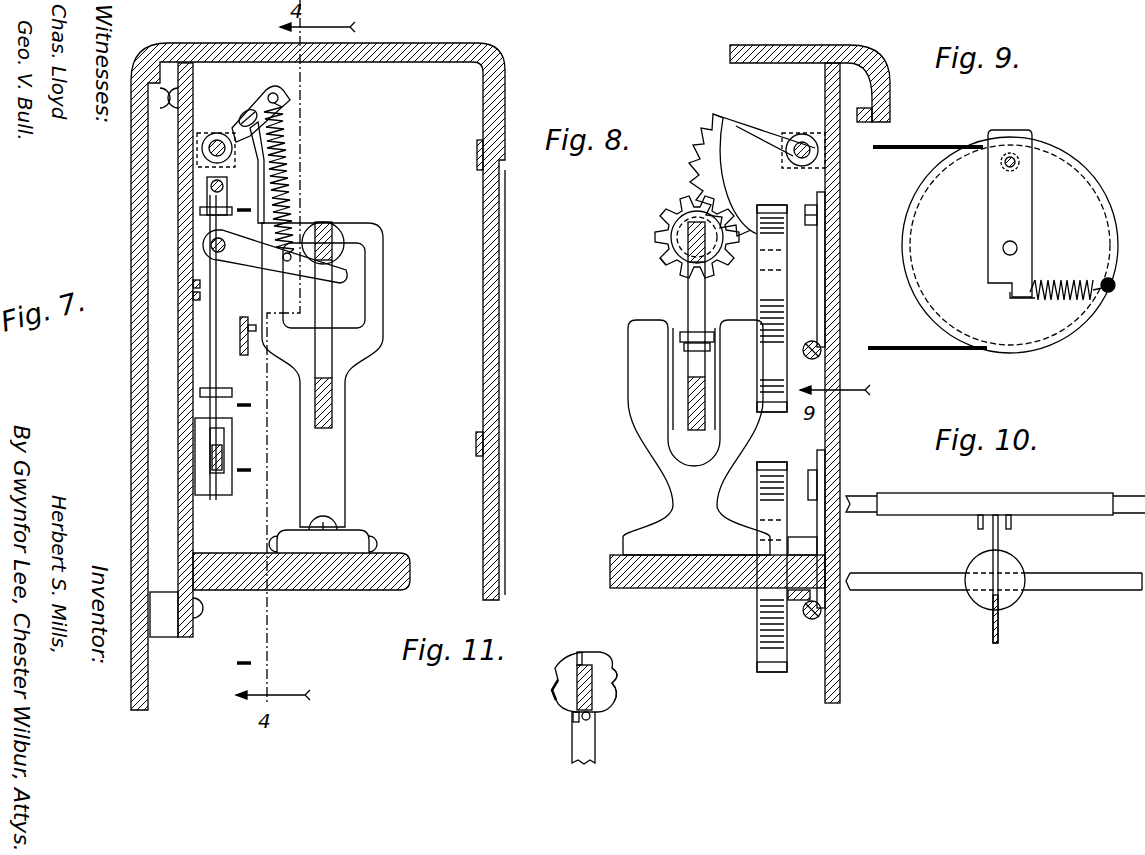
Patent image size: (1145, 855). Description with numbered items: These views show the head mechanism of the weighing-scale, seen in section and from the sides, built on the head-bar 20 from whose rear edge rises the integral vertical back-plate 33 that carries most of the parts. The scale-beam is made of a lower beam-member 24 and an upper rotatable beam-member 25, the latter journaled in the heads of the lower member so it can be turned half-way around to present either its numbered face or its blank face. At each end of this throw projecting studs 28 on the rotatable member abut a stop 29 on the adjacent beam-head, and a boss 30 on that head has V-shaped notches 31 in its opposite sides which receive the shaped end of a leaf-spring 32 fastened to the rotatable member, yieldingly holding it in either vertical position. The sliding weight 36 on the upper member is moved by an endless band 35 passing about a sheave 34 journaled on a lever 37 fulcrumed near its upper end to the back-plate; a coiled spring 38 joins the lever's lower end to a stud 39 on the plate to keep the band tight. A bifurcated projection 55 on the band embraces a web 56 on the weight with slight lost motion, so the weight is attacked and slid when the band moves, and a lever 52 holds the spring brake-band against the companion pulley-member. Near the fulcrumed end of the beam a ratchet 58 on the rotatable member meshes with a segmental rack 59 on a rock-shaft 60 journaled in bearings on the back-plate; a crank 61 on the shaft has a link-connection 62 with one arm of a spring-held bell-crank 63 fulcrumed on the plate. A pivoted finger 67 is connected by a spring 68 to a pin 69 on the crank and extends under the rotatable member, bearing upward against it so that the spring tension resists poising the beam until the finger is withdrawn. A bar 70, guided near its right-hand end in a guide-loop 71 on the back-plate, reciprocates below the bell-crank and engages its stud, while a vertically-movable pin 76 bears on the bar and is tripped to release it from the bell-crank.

In FIG. 7, the head-bar 20 is at (370, 575).
In FIG. 8, the head-bar 20 is at (710, 580).
In FIG. 7, the lower scale-beam member 24 is at (333, 418).
In FIG. 8, the lower scale-beam member 24 is at (690, 430).
In FIG. 7, the rotatable upper scale-beam member 25 is at (330, 240).
In FIG. 8, the rotatable upper scale-beam member 25 is at (687, 285).
In FIG. 10, the rotatable upper scale-beam member 25 is at (1098, 590).
In FIG. 11, the rotatable upper scale-beam member 25 is at (590, 668).
In FIG. 8, the projecting studs 28 is at (697, 347).
In FIG. 11, the projecting studs 28 is at (573, 716).
In FIG. 8, the stop 29 is at (706, 283).
In FIG. 11, the stop 29 is at (592, 718).
In FIG. 8, the boss 30 is at (690, 218).
In FIG. 11, the boss 30 is at (610, 672).
In FIG. 11, the V-shaped notches 31 is at (558, 672).
In FIG. 8, the leaf-spring 32 is at (662, 248).
In FIG. 11, the leaf-spring 32 is at (556, 692).
In FIG. 7, the back-plate 33 is at (148, 265).
In FIG. 8, the back-plate 33 is at (810, 374).
In FIG. 8, the sheave 34 is at (787, 265).
In FIG. 9, the sheave 34 is at (1082, 195).
In FIG. 7, the endless band 35 is at (244, 208).
In FIG. 8, the endless band 35 is at (772, 206).
In FIG. 9, the endless band 35 is at (905, 147).
In FIG. 10, the endless band 35 is at (1132, 495).
In FIG. 10, the sliding weight 36 is at (1022, 568).
In FIG. 8, the lever 37 is at (823, 213).
In FIG. 9, the lever 37 is at (1028, 165).
In FIG. 8, the coiled spring 38 is at (825, 345).
In FIG. 9, the coiled spring 38 is at (1066, 280).
In FIG. 9, the stud 39 is at (1105, 300).
In FIG. 7, the brake lever 52 is at (193, 296).
In FIG. 10, the bifurcated projection 55 is at (975, 528).
In FIG. 10, the web 56 is at (993, 640).
In FIG. 8, the ratchet 58 is at (672, 235).
In FIG. 8, the segmental rack 59 is at (710, 108).
In FIG. 7, the rock-shaft 60 is at (217, 136).
In FIG. 8, the rock-shaft 60 is at (802, 142).
In FIG. 7, the crank 61 is at (264, 96).
In FIG. 7, the link-connection 62 is at (266, 172).
In FIG. 7, the bell-crank 63 is at (248, 355).
In FIG. 7, the finger 67 is at (239, 256).
In FIG. 7, the spring 68 is at (292, 122).
In FIG. 7, the pin 69 is at (280, 98).
In FIG. 7, the reciprocating bar 70 is at (222, 455).
In FIG. 7, the guide-loop 71 is at (207, 186).
In FIG. 7, the vertically-movable pin 76 is at (212, 358).